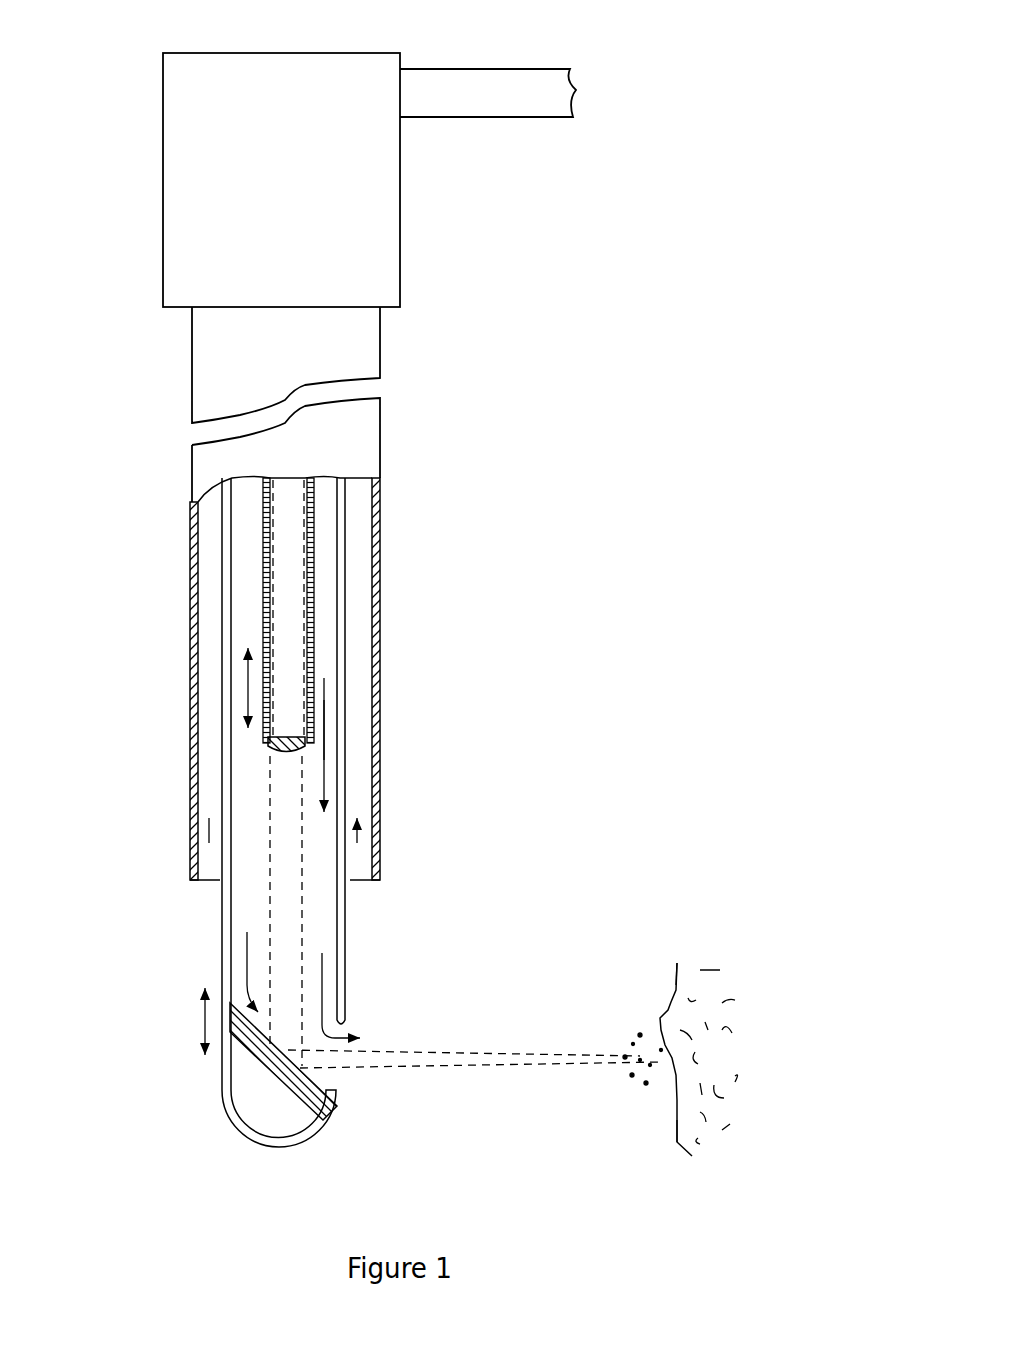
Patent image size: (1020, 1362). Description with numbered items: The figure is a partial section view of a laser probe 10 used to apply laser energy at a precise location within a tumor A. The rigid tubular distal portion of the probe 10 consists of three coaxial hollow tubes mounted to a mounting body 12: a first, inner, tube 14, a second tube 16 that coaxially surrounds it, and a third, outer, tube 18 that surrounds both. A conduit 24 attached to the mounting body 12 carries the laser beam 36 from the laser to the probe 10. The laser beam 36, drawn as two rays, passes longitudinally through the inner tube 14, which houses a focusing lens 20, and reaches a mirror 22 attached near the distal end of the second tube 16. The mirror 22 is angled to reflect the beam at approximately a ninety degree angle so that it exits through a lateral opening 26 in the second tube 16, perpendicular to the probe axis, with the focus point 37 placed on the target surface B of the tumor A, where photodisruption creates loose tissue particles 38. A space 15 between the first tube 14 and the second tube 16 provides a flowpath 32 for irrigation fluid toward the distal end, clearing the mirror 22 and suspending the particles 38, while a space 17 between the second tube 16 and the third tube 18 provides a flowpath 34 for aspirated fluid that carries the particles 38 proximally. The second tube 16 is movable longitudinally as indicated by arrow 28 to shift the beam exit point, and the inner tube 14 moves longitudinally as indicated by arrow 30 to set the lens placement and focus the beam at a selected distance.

The laser probe 10 is at (478, 395).
The mounting body 12 is at (403, 229).
The first, inner, tube 14 is at (315, 543).
The space 15 is at (324, 585).
The second tube 16 is at (347, 622).
The space 17 is at (355, 665).
The third, outer, tube 18 is at (372, 698).
The focusing lens 20 is at (326, 760).
The mirror 22 is at (320, 1105).
The conduit 24 is at (525, 90).
The lateral opening 26 is at (340, 1078).
The arrow 28 is at (203, 1018).
The arrow 30 is at (245, 692).
The flowpath 32 is at (295, 756).
The flowpath 34 is at (208, 878).
The laser beam 36 is at (268, 812).
The focus point 37 is at (665, 1062).
The tissue fragments or particles 38 is at (617, 1050).
The tumor A is at (690, 983).
The target surface B is at (673, 1128).